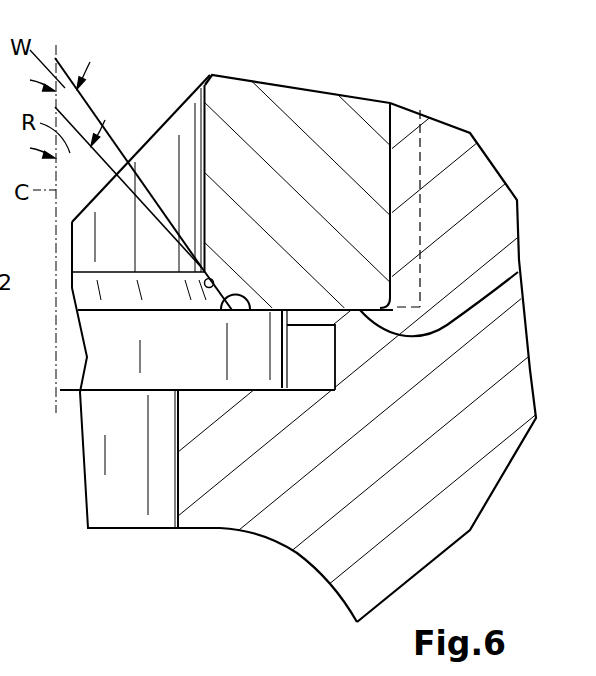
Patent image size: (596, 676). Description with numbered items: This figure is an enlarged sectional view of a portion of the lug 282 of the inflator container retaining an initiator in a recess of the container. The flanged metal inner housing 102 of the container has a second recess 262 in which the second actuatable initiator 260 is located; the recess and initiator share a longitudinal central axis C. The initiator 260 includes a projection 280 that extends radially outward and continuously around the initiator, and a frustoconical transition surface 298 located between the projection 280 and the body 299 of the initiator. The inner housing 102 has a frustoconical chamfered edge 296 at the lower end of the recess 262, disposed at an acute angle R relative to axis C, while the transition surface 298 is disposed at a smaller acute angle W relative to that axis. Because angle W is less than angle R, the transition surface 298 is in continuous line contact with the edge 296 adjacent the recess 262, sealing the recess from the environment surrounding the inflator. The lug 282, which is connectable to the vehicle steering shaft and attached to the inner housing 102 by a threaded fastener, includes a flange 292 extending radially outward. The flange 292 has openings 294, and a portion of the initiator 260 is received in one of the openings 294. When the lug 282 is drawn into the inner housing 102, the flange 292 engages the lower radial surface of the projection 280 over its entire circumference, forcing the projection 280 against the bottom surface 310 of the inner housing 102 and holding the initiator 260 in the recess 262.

The inner housing 102 is at (318, 80).
The second actuatable initiator 260 is at (150, 135).
The second recess 262 is at (203, 127).
The projection 280 is at (258, 355).
The lug 282 is at (271, 544).
The flange 292 is at (202, 462).
The opening 294 is at (176, 500).
The frustoconical chamfered edge 296 is at (209, 279).
The frustoconical transition surface 298 is at (249, 306).
The body 299 is at (182, 173).
The bottom surface 310 is at (518, 272).